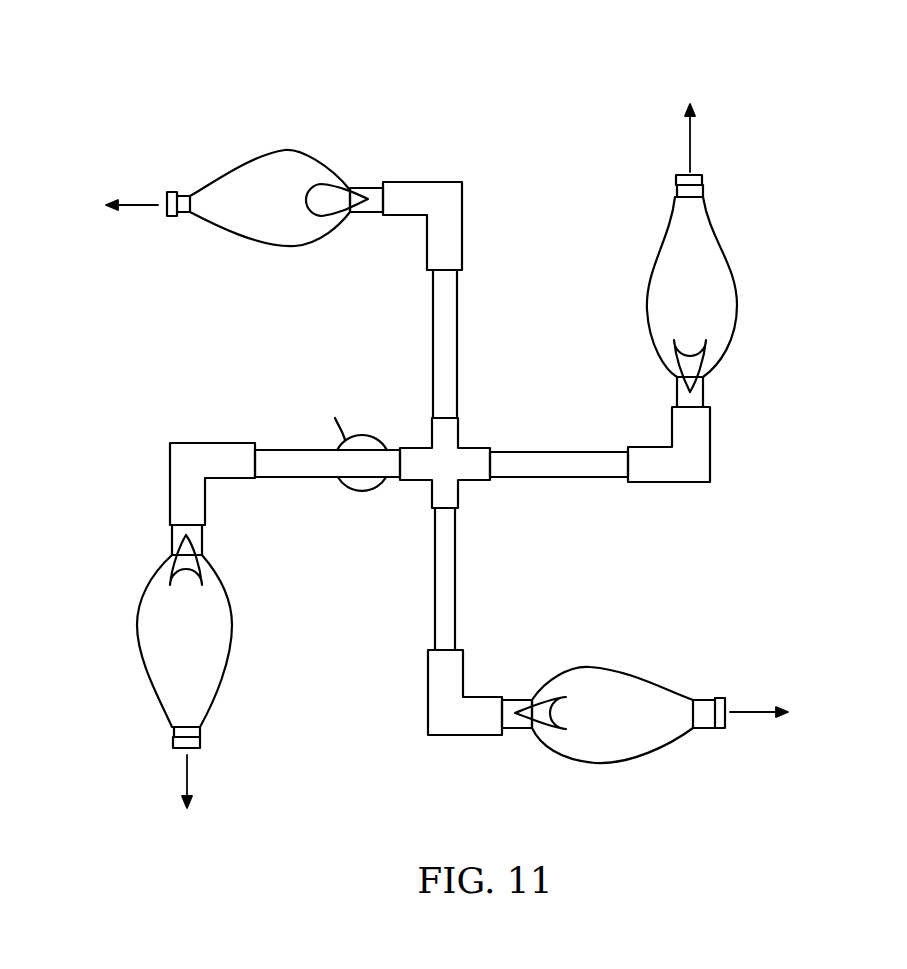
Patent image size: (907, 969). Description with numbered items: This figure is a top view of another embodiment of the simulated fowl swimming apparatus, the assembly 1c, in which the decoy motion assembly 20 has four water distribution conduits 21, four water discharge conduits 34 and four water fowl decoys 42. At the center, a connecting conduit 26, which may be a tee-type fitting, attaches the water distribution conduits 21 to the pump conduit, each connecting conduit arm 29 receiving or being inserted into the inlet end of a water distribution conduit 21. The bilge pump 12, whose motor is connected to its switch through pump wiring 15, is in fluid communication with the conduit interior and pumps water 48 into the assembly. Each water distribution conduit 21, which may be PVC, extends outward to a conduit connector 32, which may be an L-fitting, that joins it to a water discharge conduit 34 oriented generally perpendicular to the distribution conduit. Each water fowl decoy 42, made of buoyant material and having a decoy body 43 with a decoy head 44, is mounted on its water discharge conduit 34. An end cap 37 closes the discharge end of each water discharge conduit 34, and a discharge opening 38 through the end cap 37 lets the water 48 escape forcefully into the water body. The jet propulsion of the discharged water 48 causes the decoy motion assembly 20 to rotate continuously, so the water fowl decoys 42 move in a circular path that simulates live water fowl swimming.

The assembly 1c is at (372, 78).
The decoy motion assembly 20 is at (382, 343).
The connecting conduit 26 is at (482, 437).
The connecting conduit arm 29 is at (437, 424).
The water distribution conduit 21 is at (462, 340).
The conduit connector 32 is at (445, 228).
The bilge pump 12 is at (357, 486).
The pump wiring 15 is at (335, 425).
The water discharge conduit 34 is at (362, 224).
The water fowl decoy 42 is at (292, 140).
The decoy body 43 is at (280, 236).
The decoy head 44 is at (336, 192).
The end cap 37 is at (174, 218).
The discharge opening 38 is at (170, 192).
The water 48 is at (140, 210).